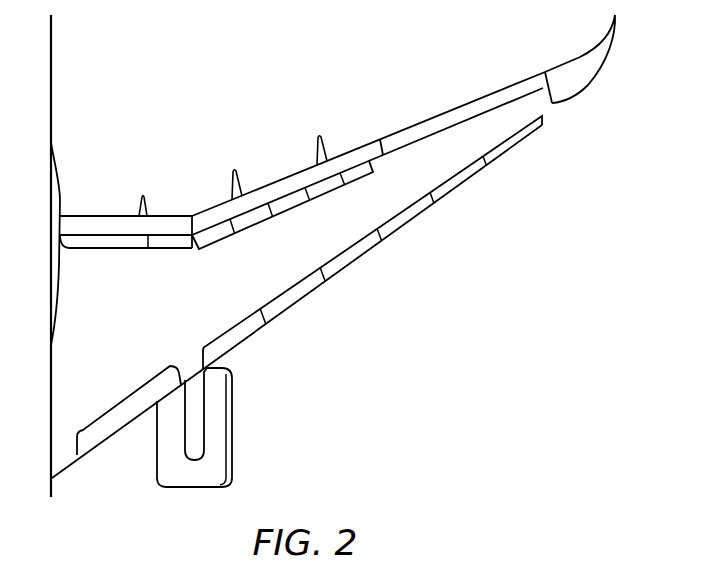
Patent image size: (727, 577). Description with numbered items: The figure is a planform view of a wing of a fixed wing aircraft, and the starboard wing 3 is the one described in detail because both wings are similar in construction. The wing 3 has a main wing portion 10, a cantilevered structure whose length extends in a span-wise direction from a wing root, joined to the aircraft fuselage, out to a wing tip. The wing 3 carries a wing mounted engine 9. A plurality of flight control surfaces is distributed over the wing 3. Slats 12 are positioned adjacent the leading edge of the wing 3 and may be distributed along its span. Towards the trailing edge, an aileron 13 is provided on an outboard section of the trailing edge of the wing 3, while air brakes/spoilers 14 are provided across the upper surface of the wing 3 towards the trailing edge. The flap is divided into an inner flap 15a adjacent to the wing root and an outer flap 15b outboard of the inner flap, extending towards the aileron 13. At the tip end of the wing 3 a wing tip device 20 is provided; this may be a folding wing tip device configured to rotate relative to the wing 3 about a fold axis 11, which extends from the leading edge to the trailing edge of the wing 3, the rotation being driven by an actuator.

The starboard wing 3 is at (475, 342).
The wing mounted engine 9 is at (177, 472).
The main wing portion 10 is at (380, 195).
The fold axis 11 is at (552, 103).
The slat 12 is at (460, 182).
The aileron 13 is at (480, 110).
The air brake/spoiler 14 is at (213, 233).
The inner flap 15a is at (115, 222).
The outer flap 15b is at (283, 185).
The wing tip device 20 is at (588, 72).